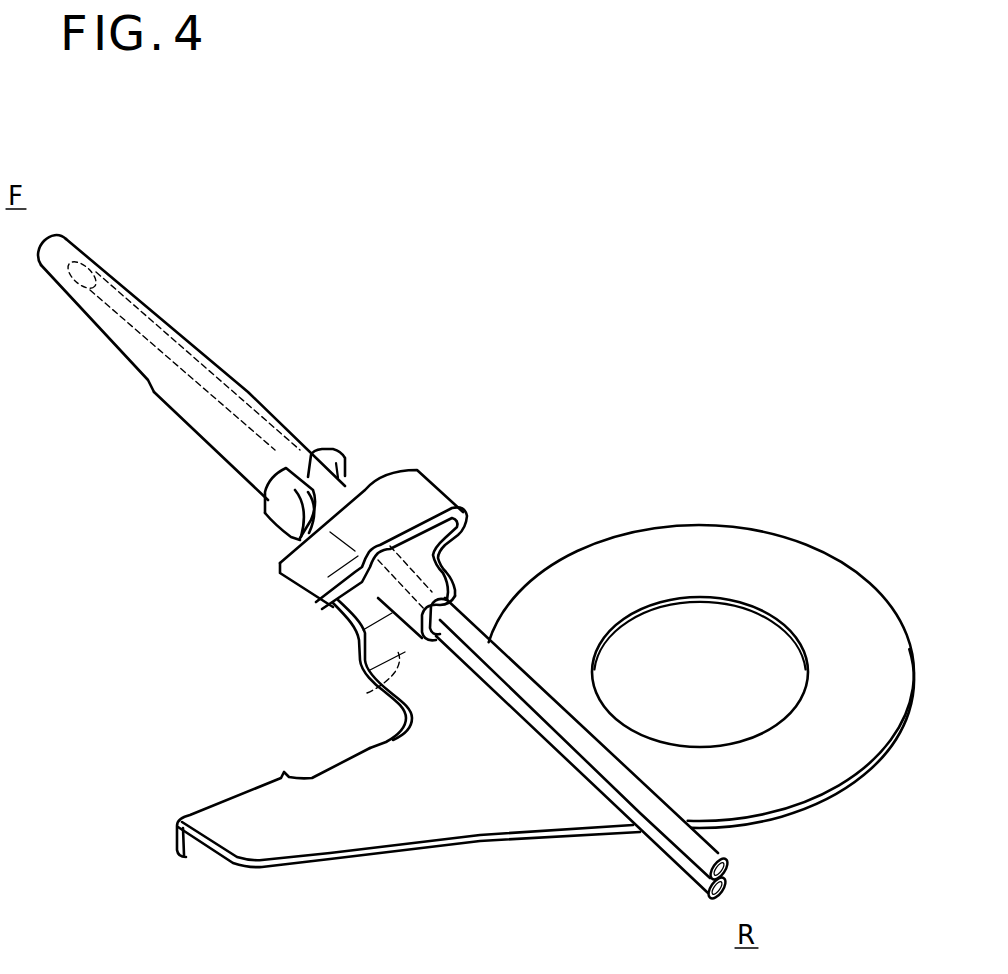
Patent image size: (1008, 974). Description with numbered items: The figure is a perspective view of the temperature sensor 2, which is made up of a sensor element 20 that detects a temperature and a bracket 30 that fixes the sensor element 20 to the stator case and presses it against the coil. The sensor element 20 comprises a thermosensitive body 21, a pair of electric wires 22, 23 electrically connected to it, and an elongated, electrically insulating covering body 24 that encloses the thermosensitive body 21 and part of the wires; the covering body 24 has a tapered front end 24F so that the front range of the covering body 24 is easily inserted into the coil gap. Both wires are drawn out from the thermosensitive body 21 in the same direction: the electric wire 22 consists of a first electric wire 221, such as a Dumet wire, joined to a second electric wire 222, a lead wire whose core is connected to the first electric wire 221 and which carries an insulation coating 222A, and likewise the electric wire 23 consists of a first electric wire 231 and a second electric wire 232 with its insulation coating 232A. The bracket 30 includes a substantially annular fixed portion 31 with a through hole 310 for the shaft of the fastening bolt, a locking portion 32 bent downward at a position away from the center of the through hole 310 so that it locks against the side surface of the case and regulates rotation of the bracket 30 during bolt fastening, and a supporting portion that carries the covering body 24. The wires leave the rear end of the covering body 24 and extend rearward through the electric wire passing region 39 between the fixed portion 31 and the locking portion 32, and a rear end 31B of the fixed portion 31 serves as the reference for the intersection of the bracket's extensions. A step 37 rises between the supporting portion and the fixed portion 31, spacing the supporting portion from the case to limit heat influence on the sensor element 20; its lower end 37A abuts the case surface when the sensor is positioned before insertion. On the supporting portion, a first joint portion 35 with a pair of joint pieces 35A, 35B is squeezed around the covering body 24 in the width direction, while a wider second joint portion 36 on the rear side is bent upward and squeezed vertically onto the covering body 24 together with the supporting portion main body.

The temperature sensor 2 is at (726, 212).
The sensor element 20 is at (156, 270).
The thermosensitive body 21 is at (60, 288).
The electric wire 22 is at (475, 613).
The electric wire 23 is at (458, 683).
The covering body 24 is at (198, 366).
The front end 24F is at (58, 233).
The bracket 30 is at (722, 462).
The fixed portion 31 is at (842, 574).
The rear end 31B is at (866, 778).
The locking portion 32 is at (200, 858).
The first joint portion 35 is at (142, 463).
The joint piece 35A is at (266, 506).
The joint piece 35B is at (313, 448).
The second joint portion 36 is at (438, 481).
The step 37 is at (352, 651).
The lower end 37A is at (367, 693).
The electric wire passing region 39 is at (550, 757).
The first electric wire 221 is at (242, 406).
The second electric wire 222 is at (540, 682).
The insulation coating 222A is at (617, 770).
The first electric wire 231 is at (121, 343).
The second electric wire 232 is at (494, 700).
The insulation coating 232A is at (612, 797).
The through hole 310 is at (688, 612).